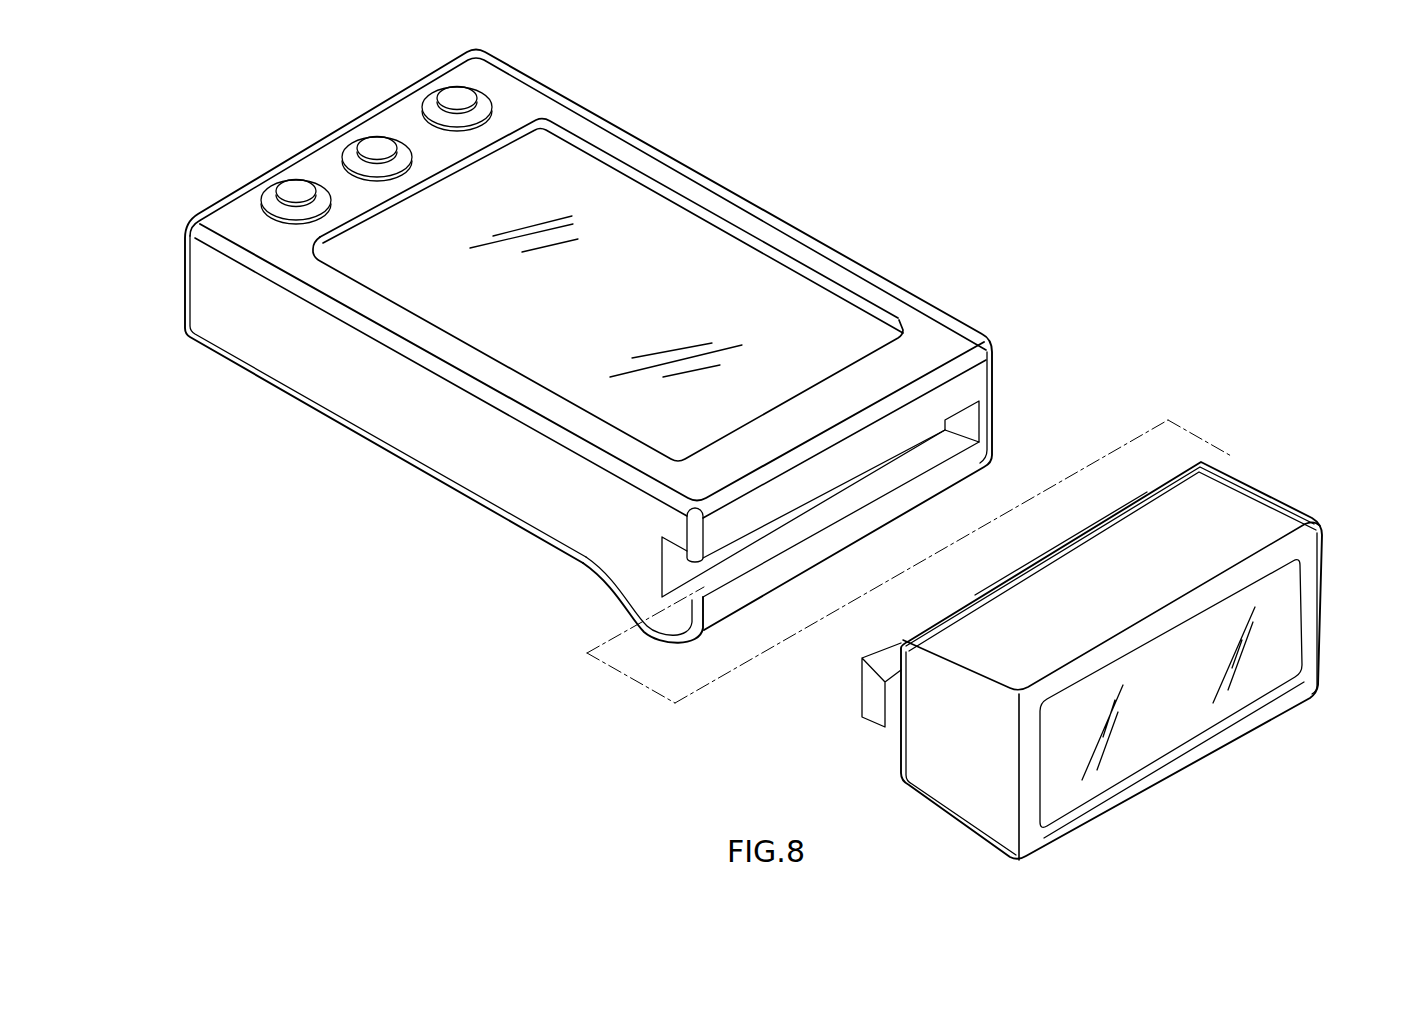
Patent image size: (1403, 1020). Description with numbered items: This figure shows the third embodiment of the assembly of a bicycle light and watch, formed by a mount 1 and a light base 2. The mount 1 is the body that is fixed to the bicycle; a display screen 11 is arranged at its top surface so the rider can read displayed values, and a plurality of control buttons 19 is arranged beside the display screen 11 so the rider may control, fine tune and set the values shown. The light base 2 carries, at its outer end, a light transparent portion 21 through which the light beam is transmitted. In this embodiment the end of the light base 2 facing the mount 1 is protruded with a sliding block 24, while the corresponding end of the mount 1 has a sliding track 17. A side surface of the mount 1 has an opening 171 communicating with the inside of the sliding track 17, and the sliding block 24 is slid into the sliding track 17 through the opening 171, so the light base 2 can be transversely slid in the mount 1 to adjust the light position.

The mount 1 is at (777, 182).
The display screen 11 is at (757, 290).
The control buttons 19 is at (377, 146).
The sliding track 17 is at (967, 413).
The opening 171 is at (662, 571).
The light base 2 is at (1188, 757).
The light transparent portion 21 is at (1253, 683).
The sliding block 24 is at (878, 700).